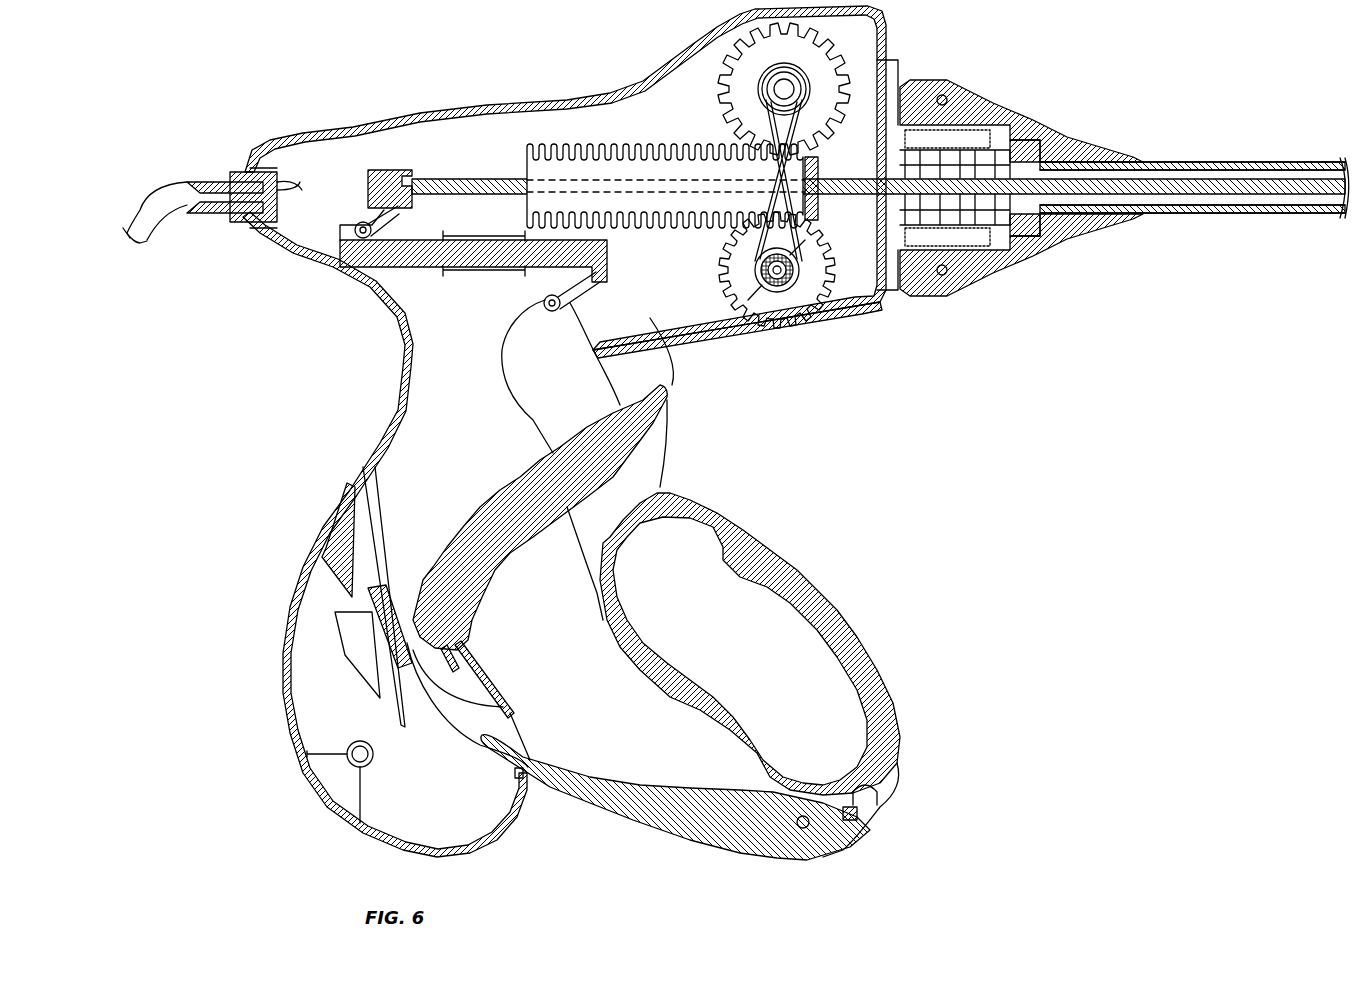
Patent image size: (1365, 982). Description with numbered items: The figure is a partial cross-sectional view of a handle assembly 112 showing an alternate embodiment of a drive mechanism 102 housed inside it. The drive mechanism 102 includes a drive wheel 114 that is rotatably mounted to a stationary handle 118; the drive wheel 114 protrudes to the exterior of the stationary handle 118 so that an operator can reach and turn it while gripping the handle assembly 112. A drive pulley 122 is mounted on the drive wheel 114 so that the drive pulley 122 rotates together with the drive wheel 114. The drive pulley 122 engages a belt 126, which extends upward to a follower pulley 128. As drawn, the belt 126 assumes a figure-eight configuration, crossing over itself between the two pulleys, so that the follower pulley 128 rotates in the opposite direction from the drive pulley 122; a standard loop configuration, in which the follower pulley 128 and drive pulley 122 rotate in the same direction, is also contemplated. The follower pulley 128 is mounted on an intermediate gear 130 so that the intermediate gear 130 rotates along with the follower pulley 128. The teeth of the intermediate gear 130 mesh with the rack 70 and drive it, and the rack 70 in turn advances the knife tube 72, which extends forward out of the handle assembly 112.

The rack 70 is at (565, 163).
The knife tube 72 is at (1200, 170).
The drive mechanism 102 is at (708, 19).
The handle assembly 112 is at (240, 113).
The drive wheel 114 is at (783, 318).
The stationary handle 118 is at (657, 330).
The drive pulley 122 is at (800, 242).
The belt 126 is at (812, 141).
The follower pulley 128 is at (795, 82).
The intermediate gear 130 is at (750, 95).